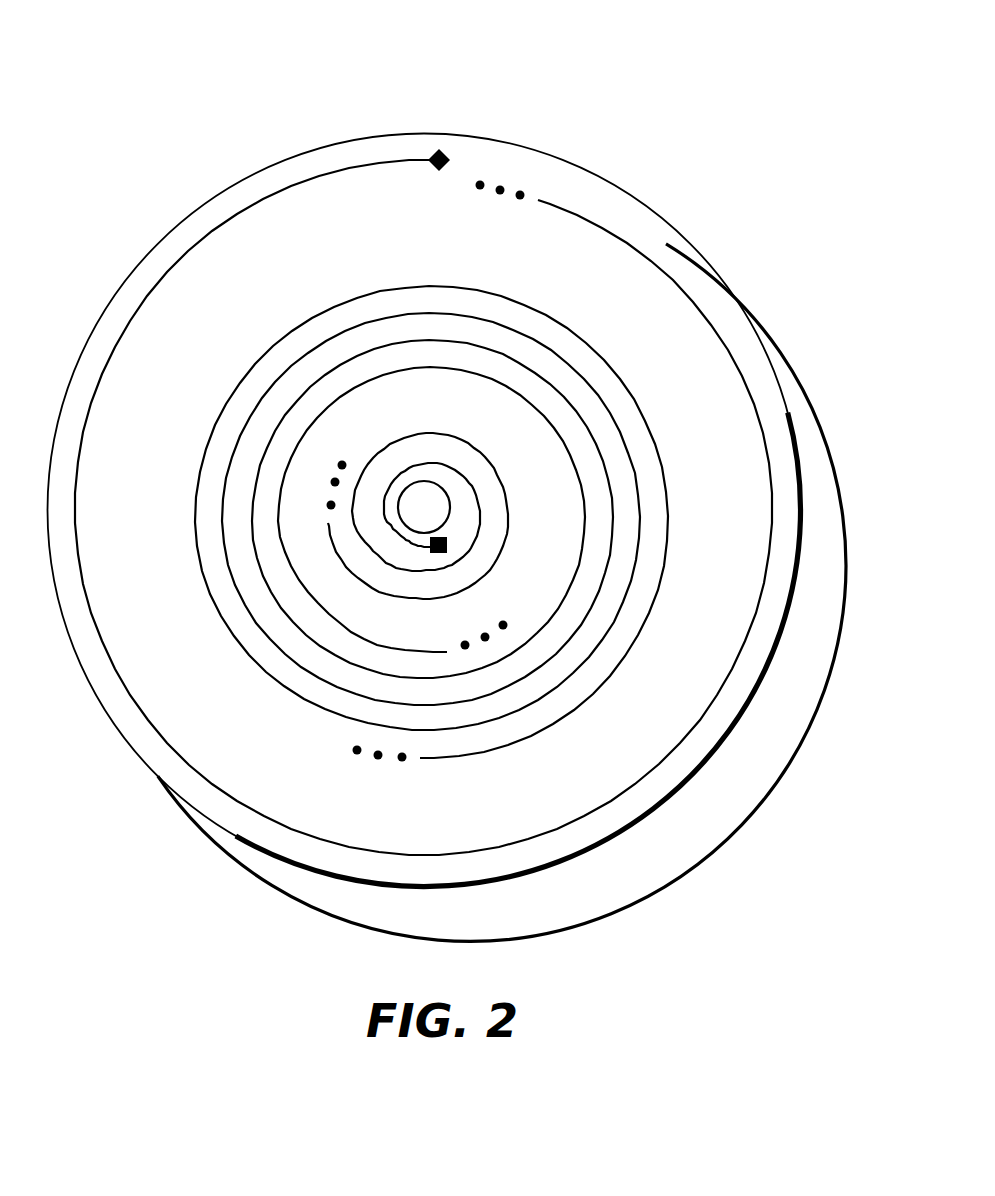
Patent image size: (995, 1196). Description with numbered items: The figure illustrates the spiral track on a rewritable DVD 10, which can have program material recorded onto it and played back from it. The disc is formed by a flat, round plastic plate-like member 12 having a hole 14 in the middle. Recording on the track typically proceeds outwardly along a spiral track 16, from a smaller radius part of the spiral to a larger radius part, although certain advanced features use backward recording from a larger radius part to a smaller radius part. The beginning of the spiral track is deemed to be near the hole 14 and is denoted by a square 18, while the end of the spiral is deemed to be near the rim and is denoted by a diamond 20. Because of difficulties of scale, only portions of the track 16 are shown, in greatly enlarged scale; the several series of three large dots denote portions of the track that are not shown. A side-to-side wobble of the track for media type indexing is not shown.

The rewritable DVD 10 is at (469, 473).
The plate-like member 12 is at (552, 152).
The hole 14 is at (447, 519).
The spiral track 16 is at (493, 465).
The square 18 is at (447, 547).
The diamond 20 is at (432, 155).